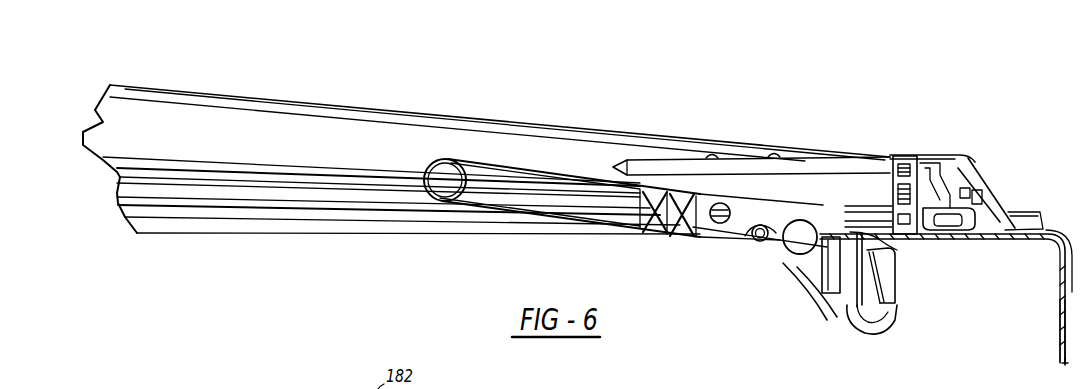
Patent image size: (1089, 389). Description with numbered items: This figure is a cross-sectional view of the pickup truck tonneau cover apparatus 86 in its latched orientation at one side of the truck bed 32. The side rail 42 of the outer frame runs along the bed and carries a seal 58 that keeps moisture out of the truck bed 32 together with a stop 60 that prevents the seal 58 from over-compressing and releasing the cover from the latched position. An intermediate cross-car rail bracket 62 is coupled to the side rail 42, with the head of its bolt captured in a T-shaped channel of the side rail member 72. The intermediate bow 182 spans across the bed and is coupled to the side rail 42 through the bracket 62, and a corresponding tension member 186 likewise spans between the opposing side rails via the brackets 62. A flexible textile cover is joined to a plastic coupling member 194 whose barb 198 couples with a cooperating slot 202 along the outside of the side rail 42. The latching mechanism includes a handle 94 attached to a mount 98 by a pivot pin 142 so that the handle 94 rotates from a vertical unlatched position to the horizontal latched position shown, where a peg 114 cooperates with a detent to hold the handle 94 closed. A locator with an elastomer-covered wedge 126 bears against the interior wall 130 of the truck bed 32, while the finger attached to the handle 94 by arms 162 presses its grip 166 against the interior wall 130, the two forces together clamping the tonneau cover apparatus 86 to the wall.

The pickup truck bed 32 is at (1062, 320).
The side rail 42 is at (938, 139).
The seal 58 is at (960, 230).
The stop 60 is at (915, 234).
The intermediate cross-car rail bracket 62 is at (812, 165).
The side rail member 72 is at (907, 157).
The tonneau cover apparatus 86 is at (723, 265).
The handle 94 is at (542, 195).
The mount 98 is at (743, 213).
The peg 114 is at (760, 243).
The wedge 126 is at (832, 263).
The interior wall 130 is at (850, 308).
The pivot pin 142 is at (797, 247).
The arm 162 is at (862, 327).
The grip 166 is at (883, 280).
The intermediate bow 182 is at (337, 132).
The tension member 186 is at (257, 213).
The coupling member 194 is at (993, 197).
The barb 198 is at (968, 193).
The slot 202 is at (977, 204).